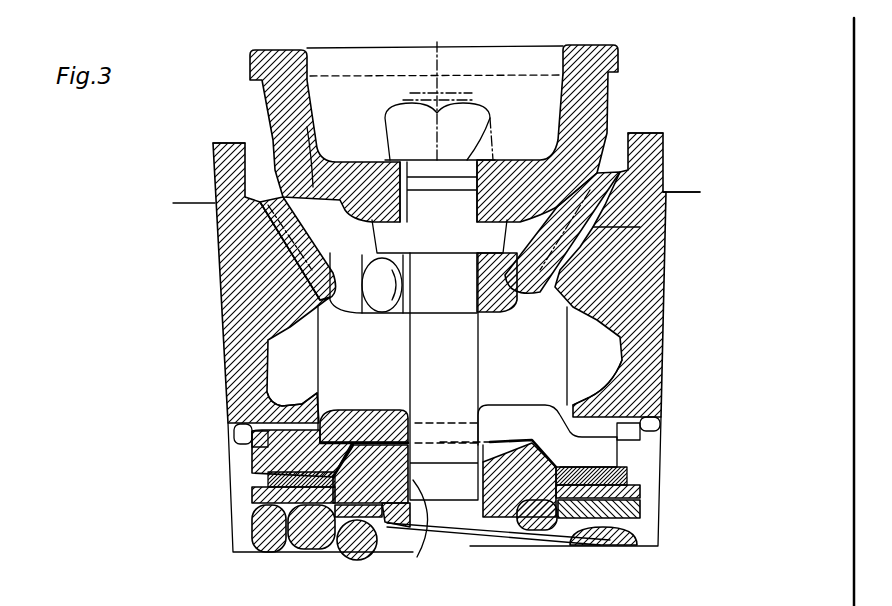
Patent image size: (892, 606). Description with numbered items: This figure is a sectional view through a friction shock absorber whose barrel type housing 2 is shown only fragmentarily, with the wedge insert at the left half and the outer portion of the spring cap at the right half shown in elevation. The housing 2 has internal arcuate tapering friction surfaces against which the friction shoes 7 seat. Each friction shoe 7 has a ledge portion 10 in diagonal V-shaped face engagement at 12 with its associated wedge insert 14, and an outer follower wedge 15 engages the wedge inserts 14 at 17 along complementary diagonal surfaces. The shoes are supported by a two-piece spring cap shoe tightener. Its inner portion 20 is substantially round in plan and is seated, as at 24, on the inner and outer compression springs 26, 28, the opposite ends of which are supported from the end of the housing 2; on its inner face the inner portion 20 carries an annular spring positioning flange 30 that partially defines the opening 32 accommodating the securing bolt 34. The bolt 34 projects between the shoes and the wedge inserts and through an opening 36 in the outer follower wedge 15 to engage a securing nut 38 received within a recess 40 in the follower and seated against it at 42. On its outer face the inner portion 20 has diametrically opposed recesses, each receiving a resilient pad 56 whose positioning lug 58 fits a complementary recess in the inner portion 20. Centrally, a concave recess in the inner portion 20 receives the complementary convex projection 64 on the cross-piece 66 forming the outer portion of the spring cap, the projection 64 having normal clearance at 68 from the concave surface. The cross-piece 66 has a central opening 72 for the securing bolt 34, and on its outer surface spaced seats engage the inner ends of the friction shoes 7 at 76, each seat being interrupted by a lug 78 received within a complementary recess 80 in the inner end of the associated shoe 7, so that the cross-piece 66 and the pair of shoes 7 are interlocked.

The barrel type housing 2 is at (676, 192).
The friction shoes 7 is at (250, 267).
The ledge portion 10 is at (290, 305).
The diagonal V-shaped face engagement 12 is at (215, 203).
The wedge insert 14 is at (215, 187).
The outer follower wedge 15 is at (618, 45).
The complementary diagonal surfaces 17 is at (313, 160).
The inner portion of the spring cap 20 is at (627, 487).
The seat on outer compression spring 24 is at (295, 549).
The inner compression spring 26 is at (353, 547).
The outer compression spring 28 is at (257, 552).
The annular spring positioning flange 30 is at (492, 546).
The opening 32 is at (418, 555).
The securing bolt 34 is at (458, 92).
The opening in outer wedge follower 36 is at (490, 122).
The securing nut 38 is at (398, 92).
The recess 40 is at (562, 102).
The nut seat 42 is at (390, 160).
The resilient pad 56 is at (268, 476).
The positioning projection or lug 58 is at (255, 502).
The convex projection 64 is at (377, 408).
The cross-piece 66 is at (547, 402).
The normal clearance 68 is at (485, 442).
The opening 72 is at (416, 430).
The engagement of seats with shoes 76 is at (230, 385).
The lug 78 is at (252, 438).
The recess 80 is at (237, 427).